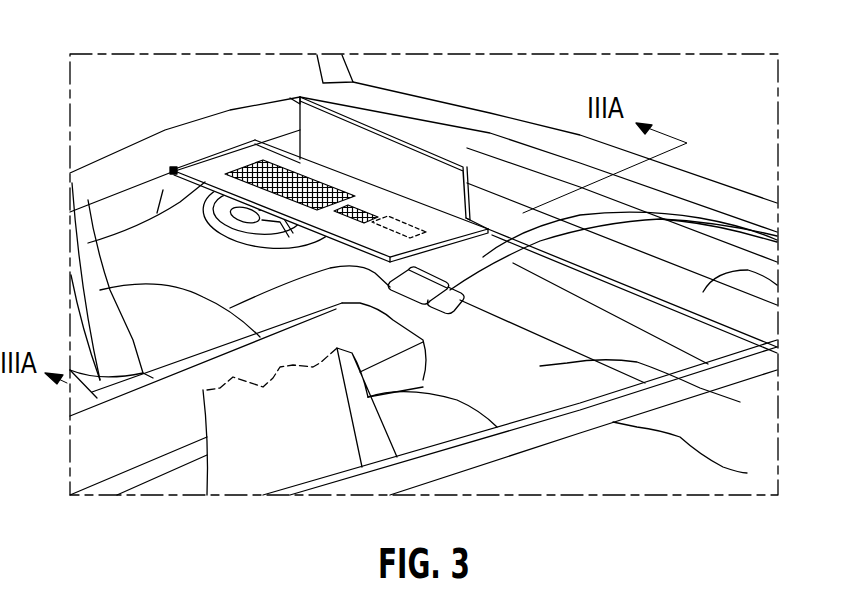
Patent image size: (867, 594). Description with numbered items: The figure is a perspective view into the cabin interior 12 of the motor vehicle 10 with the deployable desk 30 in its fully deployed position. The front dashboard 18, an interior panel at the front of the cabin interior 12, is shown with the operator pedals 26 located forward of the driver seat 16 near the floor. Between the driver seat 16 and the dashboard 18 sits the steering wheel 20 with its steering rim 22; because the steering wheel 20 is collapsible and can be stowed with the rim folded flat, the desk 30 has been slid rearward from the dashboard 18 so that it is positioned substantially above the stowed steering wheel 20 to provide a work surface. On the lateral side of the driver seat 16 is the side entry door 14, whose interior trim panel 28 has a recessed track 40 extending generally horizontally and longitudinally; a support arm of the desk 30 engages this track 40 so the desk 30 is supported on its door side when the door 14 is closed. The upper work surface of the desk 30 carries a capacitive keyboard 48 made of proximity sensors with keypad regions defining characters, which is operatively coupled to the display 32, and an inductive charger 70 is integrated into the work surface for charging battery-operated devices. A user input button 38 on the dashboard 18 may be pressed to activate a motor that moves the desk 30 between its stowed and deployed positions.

The motor vehicle 10 is at (613, 422).
The cabin interior 12 is at (538, 366).
The side entry door 14 is at (148, 148).
The driver seat 16 is at (145, 297).
The front dashboard 18 is at (777, 285).
The steering wheel 20 is at (213, 181).
The steering rim 22 is at (288, 243).
The operator pedals 26 is at (777, 242).
The trim panel 28 is at (138, 170).
The deployable desk 30 is at (484, 226).
The display 32 is at (418, 167).
The user input button 38 is at (443, 278).
The recessed track 40 is at (174, 170).
The capacitive keyboard 48 is at (339, 158).
The inductive charger 70 is at (392, 212).